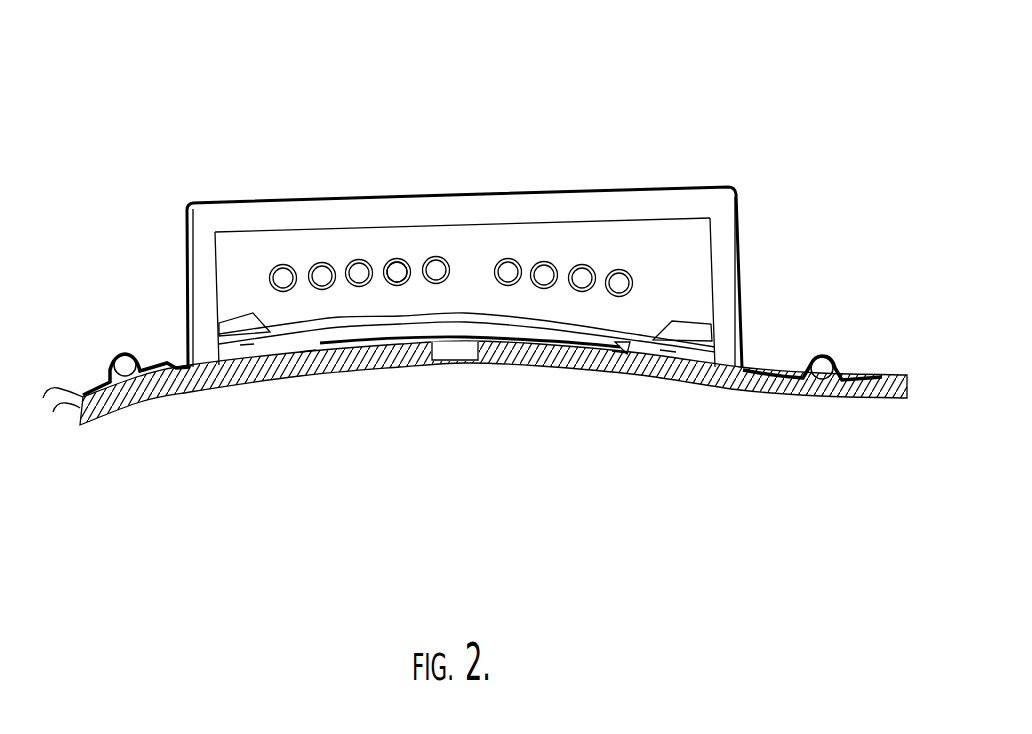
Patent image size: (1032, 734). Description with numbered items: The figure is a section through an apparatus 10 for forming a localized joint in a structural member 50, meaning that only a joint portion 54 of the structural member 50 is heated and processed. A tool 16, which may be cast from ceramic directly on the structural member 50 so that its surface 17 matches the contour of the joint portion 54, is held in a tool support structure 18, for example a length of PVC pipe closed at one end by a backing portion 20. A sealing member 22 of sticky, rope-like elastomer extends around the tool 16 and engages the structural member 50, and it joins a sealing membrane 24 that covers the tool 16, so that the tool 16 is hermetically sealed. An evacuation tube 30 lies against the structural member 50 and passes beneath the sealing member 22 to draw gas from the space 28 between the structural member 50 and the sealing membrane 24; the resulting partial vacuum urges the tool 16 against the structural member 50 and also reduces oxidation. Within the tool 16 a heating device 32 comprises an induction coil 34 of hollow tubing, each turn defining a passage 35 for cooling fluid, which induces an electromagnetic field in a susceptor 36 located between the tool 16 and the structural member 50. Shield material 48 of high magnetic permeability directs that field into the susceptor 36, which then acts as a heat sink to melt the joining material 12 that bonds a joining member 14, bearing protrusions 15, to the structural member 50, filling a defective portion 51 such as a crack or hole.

The apparatus 10 is at (622, 107).
The joining material 12 is at (520, 342).
The joining member 14 is at (648, 370).
The protrusions 15 is at (307, 368).
The tool 16 is at (332, 242).
The surface 17 is at (308, 328).
The tool support structure 18 is at (728, 253).
The backing portion 20 is at (655, 205).
The sealing member 22 is at (122, 353).
The sealing membrane 24 is at (186, 292).
The space 28 is at (247, 343).
The evacuation tube 30 is at (68, 383).
The heating device 32 is at (447, 256).
The induction coil 34 is at (400, 287).
The passage 35 is at (397, 272).
The susceptor 36 is at (376, 327).
The shield material 48 is at (235, 322).
The structural member 50 is at (828, 400).
The defective portion 51 is at (459, 360).
The joint portion 54 is at (337, 403).